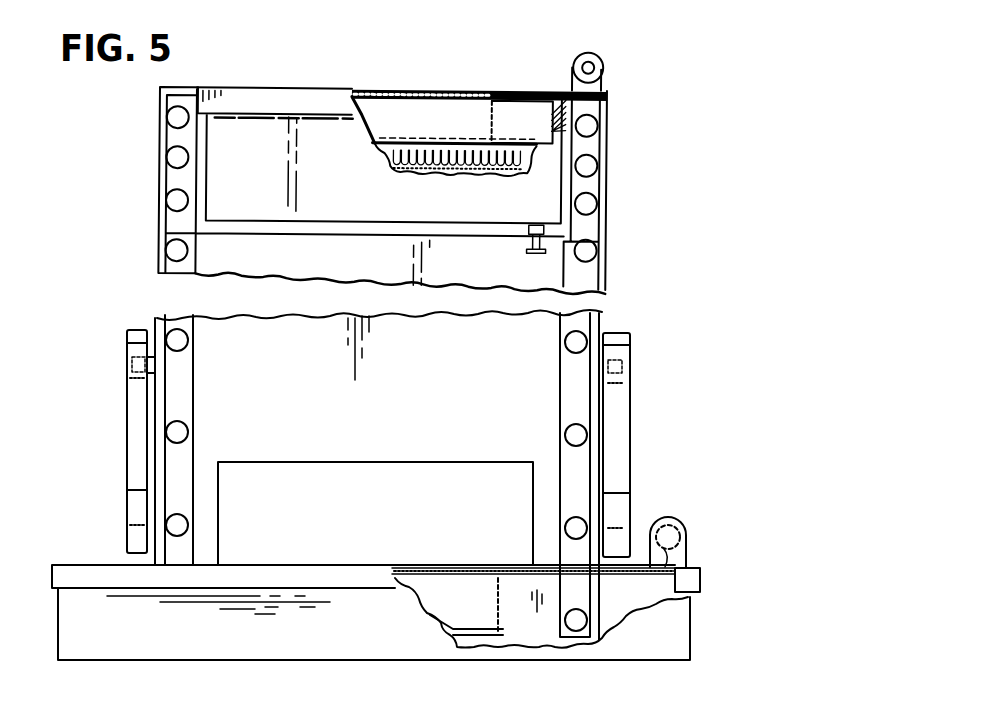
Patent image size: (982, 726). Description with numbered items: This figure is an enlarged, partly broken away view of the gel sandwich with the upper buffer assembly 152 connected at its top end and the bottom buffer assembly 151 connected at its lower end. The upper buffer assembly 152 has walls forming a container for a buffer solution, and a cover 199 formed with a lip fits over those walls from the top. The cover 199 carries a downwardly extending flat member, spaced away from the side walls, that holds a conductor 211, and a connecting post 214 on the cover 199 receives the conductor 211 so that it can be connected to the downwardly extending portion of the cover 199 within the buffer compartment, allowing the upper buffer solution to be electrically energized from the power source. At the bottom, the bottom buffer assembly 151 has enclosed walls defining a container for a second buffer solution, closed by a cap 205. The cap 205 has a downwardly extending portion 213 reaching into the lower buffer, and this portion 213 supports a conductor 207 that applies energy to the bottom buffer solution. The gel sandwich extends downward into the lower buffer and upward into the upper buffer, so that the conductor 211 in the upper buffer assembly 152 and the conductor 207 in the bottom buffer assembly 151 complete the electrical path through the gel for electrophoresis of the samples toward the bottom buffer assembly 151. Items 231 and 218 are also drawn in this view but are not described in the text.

The upper buffer assembly 152 is at (276, 72).
The cover 199 is at (457, 90).
The collection tray 231 is at (533, 128).
The connecting post 214 is at (603, 55).
The conductor 211 is at (603, 75).
The cap 205 is at (95, 578).
The bottom buffer assembly 151 is at (430, 560).
The conductor 207 is at (605, 588).
The downwardly extending portion 213 is at (483, 612).
The lower pulley 218 is at (687, 545).